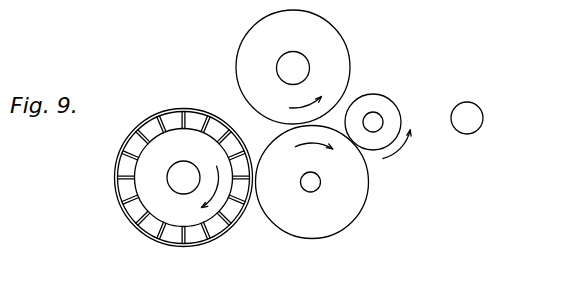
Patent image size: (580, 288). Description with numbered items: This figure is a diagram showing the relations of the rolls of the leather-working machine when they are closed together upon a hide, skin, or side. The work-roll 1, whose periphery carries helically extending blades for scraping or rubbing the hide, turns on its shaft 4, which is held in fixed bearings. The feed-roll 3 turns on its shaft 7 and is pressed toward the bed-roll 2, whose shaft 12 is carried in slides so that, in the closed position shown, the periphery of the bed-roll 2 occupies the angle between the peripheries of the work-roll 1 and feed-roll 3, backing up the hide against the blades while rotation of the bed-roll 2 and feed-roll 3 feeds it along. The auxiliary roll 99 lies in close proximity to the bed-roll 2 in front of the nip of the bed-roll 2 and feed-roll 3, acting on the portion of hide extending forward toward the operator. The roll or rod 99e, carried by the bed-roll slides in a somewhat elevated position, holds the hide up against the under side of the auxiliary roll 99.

The work-roll 1 is at (115, 163).
The shaft of the work-roll 4 is at (180, 160).
The feed-roll 3 is at (346, 38).
The shaft of the feed-roll 7 is at (284, 54).
The bed-roll 2 is at (363, 210).
The shaft of the bed-roll 12 is at (311, 193).
The auxiliary roll 99 is at (394, 96).
The roll or rod 99e is at (484, 115).